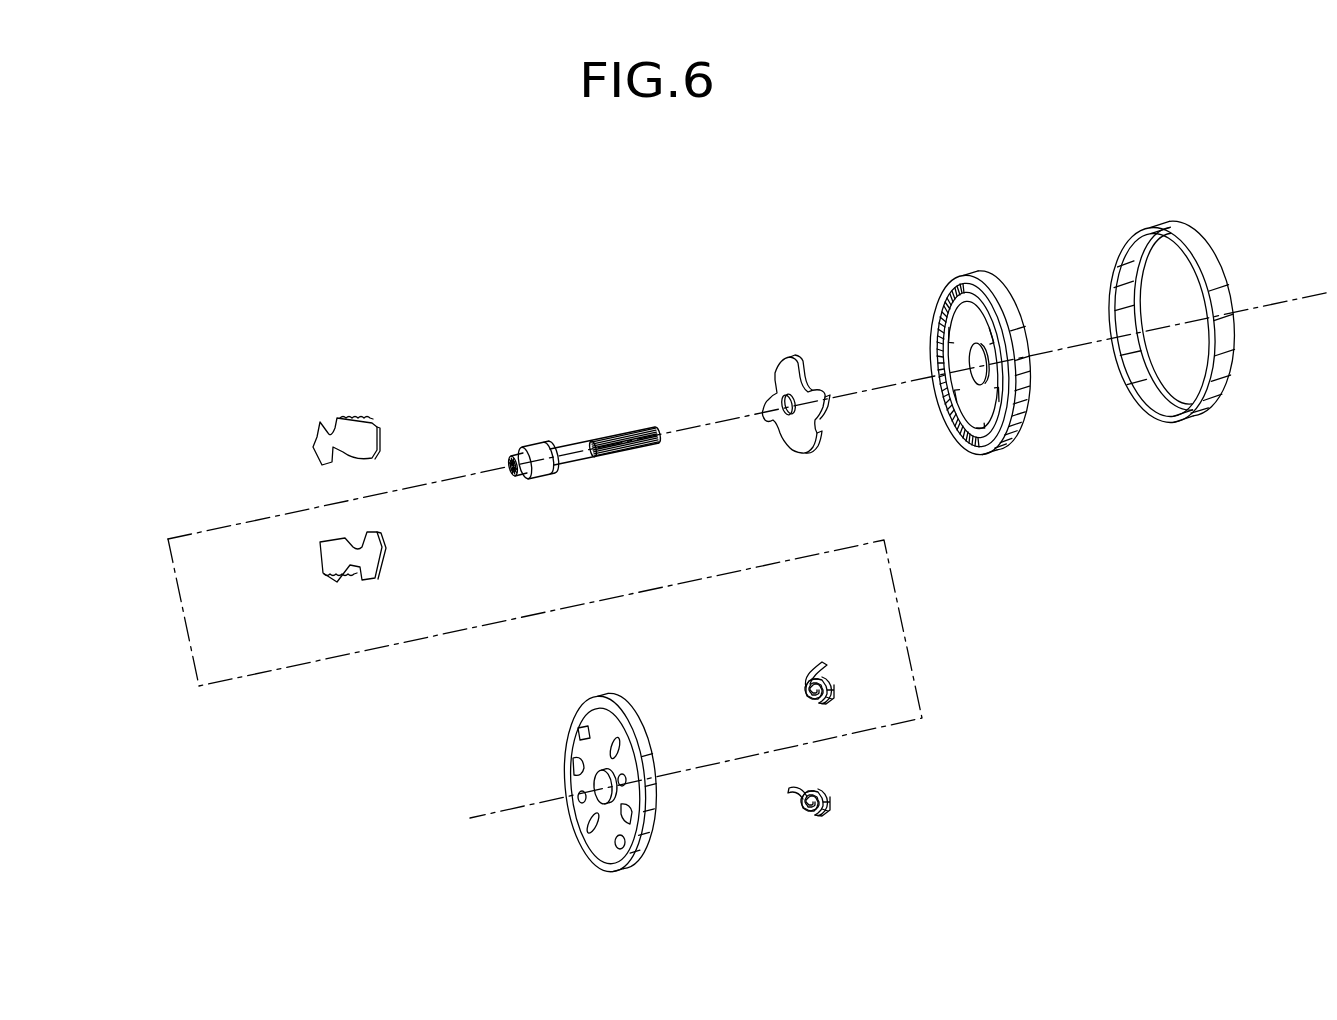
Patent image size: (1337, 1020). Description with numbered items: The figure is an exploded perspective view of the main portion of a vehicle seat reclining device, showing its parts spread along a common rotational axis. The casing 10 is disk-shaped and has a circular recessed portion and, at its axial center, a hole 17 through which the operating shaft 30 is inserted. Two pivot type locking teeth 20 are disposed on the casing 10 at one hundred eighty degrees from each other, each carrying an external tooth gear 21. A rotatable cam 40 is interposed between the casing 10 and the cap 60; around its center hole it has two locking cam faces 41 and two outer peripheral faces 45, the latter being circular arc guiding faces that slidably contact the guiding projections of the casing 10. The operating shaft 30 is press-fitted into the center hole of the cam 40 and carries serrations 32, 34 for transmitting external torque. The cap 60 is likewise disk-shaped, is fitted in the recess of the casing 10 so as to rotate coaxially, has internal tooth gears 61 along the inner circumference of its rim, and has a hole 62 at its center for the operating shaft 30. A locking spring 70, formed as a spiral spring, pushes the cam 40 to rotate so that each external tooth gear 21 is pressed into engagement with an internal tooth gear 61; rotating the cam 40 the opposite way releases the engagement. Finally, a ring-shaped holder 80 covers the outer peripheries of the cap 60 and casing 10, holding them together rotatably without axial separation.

The casing 10 is at (560, 763).
The hole 17 is at (600, 783).
The locking tooth 20 is at (368, 487).
The external tooth gear 21 is at (360, 412).
The operating shaft 30 is at (556, 394).
The serration 32 is at (628, 428).
The serration 34 is at (514, 455).
The cam 40 is at (798, 387).
The locking cam face 41 is at (790, 355).
The outer peripheral face 45 is at (766, 398).
The cap 60 is at (996, 335).
The internal tooth gear 61 is at (957, 425).
The hole 62 is at (983, 352).
The locking spring 70 is at (798, 670).
The holder 80 is at (1180, 238).